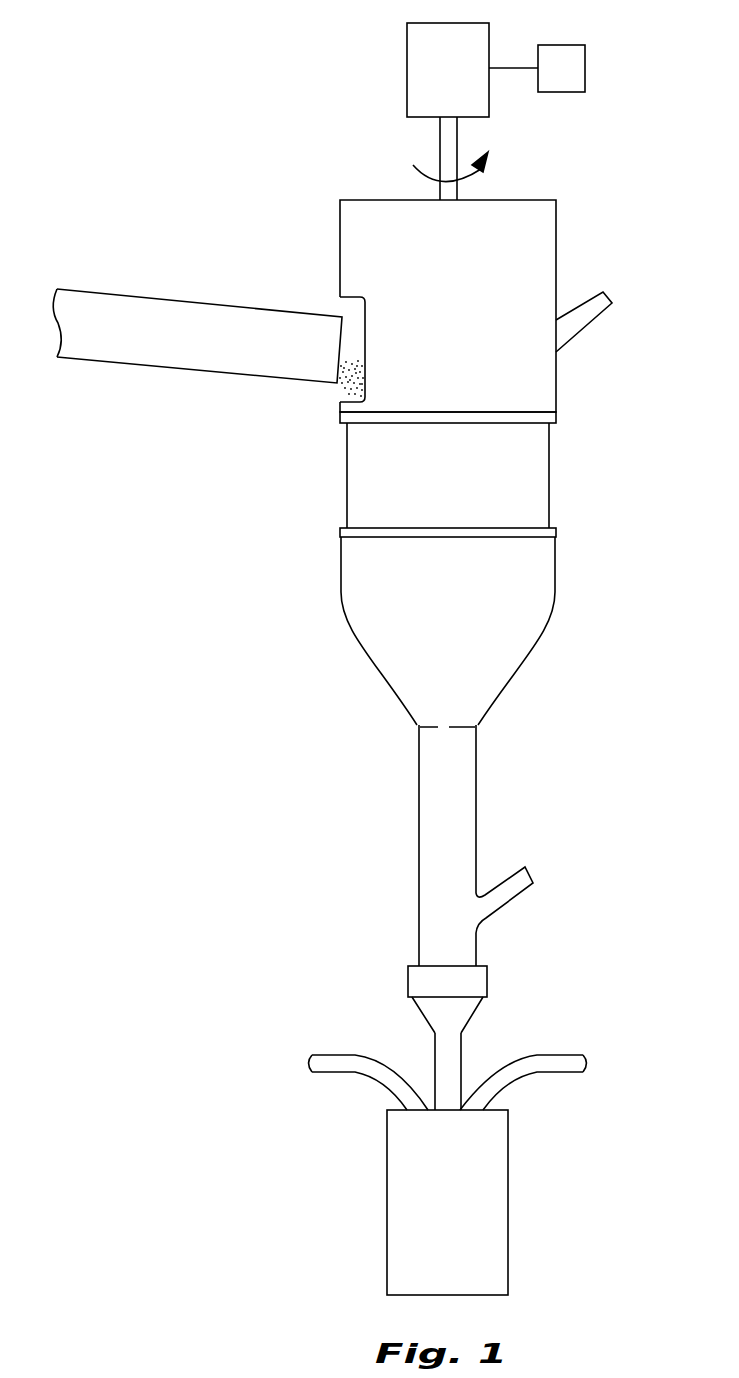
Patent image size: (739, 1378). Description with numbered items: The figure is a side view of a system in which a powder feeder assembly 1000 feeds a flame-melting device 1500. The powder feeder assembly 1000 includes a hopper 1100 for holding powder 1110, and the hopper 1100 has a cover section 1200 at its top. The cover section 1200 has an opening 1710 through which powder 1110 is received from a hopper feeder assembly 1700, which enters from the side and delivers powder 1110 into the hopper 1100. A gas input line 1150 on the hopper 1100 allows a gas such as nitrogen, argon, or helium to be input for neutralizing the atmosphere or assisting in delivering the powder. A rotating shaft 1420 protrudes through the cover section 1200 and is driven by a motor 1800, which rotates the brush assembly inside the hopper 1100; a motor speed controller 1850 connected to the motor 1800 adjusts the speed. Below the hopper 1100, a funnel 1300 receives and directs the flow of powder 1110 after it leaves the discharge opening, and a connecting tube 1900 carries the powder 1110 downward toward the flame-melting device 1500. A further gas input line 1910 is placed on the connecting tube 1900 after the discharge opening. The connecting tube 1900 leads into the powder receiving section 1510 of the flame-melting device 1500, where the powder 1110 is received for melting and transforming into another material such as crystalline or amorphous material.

The powder feeder assembly 1000 is at (268, 130).
The hopper 1100 is at (542, 467).
The powder 1110 is at (352, 381).
The gas input line 1150 is at (592, 314).
The cover section 1200 is at (552, 238).
The funnel 1300 is at (548, 572).
The rotating shaft 1420 is at (440, 148).
The flame-melting device 1500 is at (518, 1143).
The powder receiving section 1510 is at (477, 983).
The hopper feeder assembly 1700 is at (157, 307).
The opening 1710 is at (347, 306).
The motor 1800 is at (420, 70).
The motor speed controller 1850 is at (577, 70).
The connecting tube 1900 is at (467, 800).
The gas input line 1910 is at (515, 890).